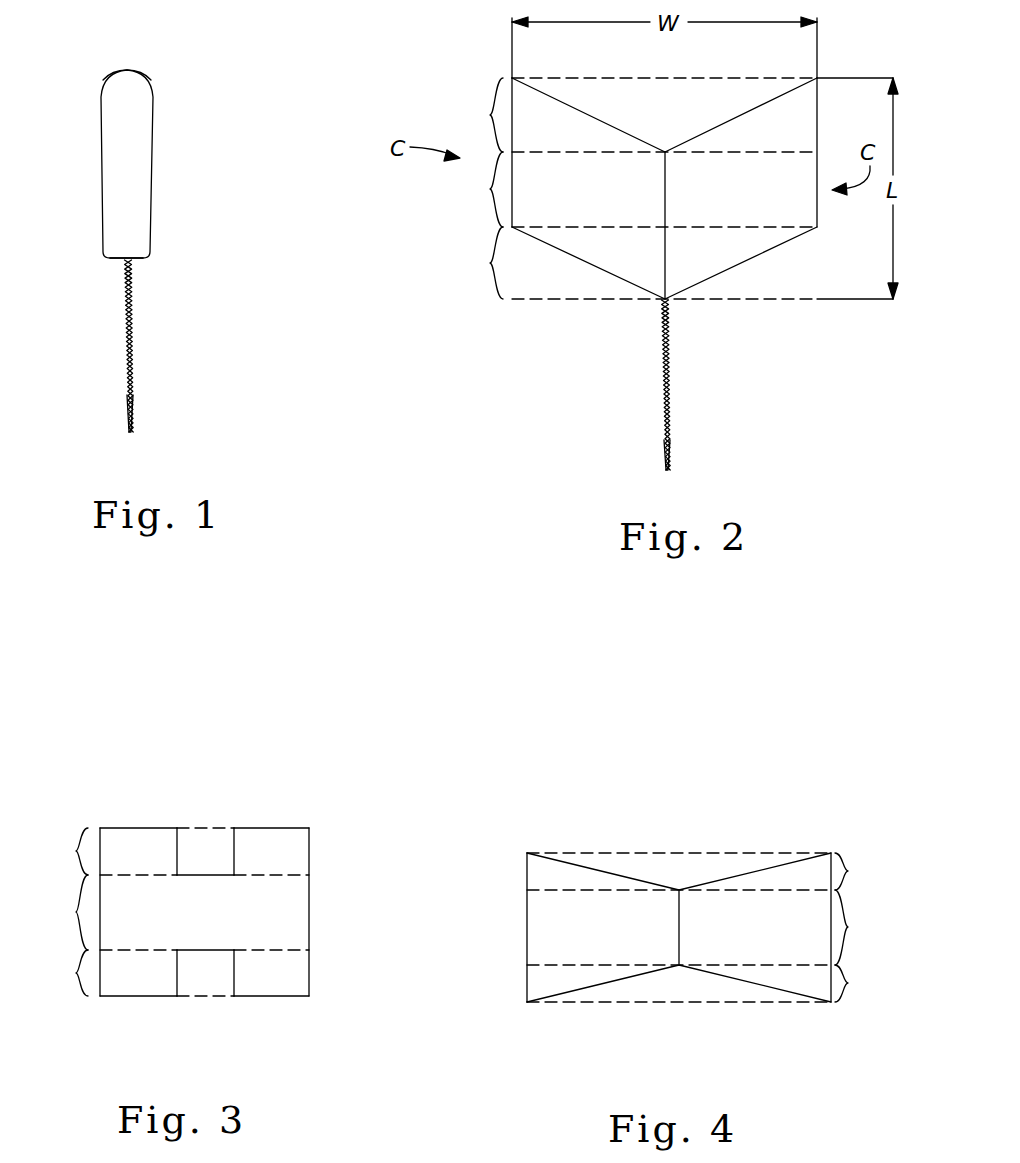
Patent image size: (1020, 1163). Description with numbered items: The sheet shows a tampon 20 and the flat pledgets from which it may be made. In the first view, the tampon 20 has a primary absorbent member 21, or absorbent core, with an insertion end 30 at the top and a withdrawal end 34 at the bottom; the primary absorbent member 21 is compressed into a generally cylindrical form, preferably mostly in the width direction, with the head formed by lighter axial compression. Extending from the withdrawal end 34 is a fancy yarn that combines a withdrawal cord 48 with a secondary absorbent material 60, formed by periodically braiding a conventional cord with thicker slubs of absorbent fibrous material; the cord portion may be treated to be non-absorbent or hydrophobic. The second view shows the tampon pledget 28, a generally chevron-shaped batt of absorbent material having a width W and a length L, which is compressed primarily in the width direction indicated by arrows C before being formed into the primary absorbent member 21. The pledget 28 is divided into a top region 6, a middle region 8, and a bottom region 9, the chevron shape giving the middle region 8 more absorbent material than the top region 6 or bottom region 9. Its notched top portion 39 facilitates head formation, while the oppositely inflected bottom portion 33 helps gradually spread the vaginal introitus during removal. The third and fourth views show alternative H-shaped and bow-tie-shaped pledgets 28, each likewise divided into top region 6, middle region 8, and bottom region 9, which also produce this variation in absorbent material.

In FIG. 1, the tampon 20 is at (168, 56).
In FIG. 1, the primary absorbent member 21 is at (139, 168).
In FIG. 1, the insertion end 30 is at (125, 70).
In FIG. 1, the withdrawal end 34 is at (148, 256).
In FIG. 1, the secondary absorbent material 60 is at (133, 305).
In FIG. 2, the secondary absorbent material 60 is at (669, 337).
In FIG. 1, the withdrawal cord 48 is at (132, 372).
In FIG. 2, the withdrawal cord 48 is at (670, 413).
In FIG. 2, the tampon pledget 28 is at (805, 107).
In FIG. 3, the tampon pledget 28 is at (292, 916).
In FIG. 4, the tampon pledget 28 is at (537, 875).
In FIG. 2, the top portion 39 is at (741, 115).
In FIG. 2, the bottom portion 33 is at (589, 264).
In FIG. 2, the top region 6 is at (484, 115).
In FIG. 3, the top region 6 is at (70, 851).
In FIG. 4, the top region 6 is at (852, 871).
In FIG. 2, the middle region 8 is at (484, 189).
In FIG. 3, the middle region 8 is at (70, 912).
In FIG. 4, the middle region 8 is at (852, 927).
In FIG. 2, the bottom region 9 is at (484, 263).
In FIG. 3, the bottom region 9 is at (70, 973).
In FIG. 4, the bottom region 9 is at (852, 983).